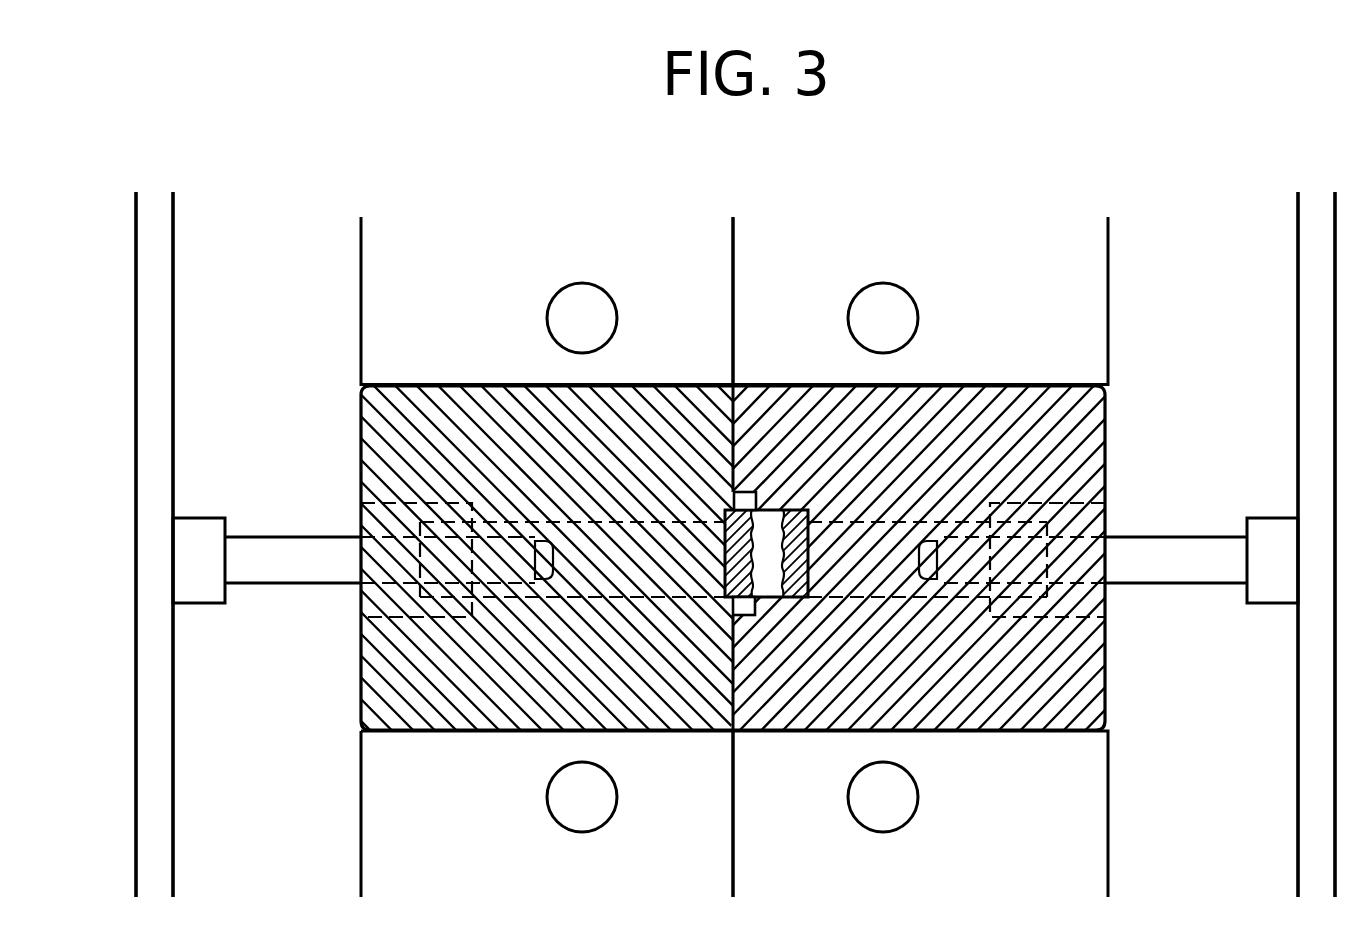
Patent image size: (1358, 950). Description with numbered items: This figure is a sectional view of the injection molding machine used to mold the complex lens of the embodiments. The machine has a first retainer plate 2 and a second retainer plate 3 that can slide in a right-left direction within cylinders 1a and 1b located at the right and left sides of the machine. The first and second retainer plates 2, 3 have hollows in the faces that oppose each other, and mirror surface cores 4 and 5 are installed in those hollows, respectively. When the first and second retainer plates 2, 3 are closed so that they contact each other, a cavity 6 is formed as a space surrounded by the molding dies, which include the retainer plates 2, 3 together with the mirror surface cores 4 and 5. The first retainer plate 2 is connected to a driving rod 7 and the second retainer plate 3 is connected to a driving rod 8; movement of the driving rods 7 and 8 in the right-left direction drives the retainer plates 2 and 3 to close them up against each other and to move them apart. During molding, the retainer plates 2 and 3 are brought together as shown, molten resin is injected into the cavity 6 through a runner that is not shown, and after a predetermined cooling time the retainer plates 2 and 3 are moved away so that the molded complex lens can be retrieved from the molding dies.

The cylinder 1a is at (455, 260).
The cylinder 1b is at (829, 245).
The first retainer plate 2 is at (364, 686).
The second retainer plate 3 is at (1105, 685).
The mirror surface core 4 is at (748, 615).
The mirror surface core 5 is at (792, 598).
The cavity 6 is at (769, 512).
The driving rod 7 is at (275, 578).
The driving rod 8 is at (1188, 575).